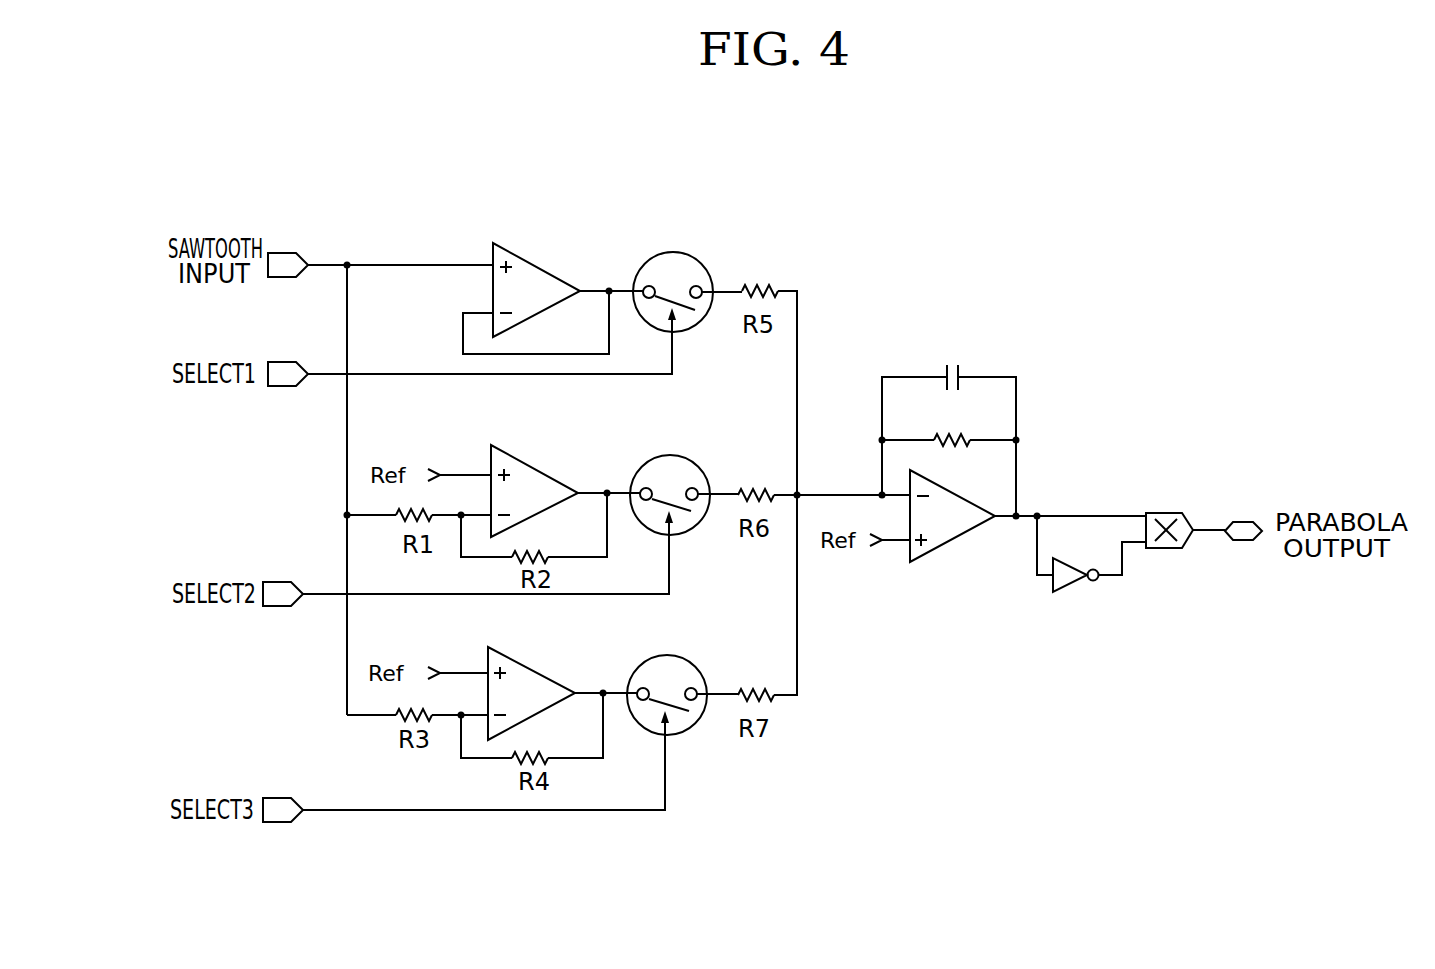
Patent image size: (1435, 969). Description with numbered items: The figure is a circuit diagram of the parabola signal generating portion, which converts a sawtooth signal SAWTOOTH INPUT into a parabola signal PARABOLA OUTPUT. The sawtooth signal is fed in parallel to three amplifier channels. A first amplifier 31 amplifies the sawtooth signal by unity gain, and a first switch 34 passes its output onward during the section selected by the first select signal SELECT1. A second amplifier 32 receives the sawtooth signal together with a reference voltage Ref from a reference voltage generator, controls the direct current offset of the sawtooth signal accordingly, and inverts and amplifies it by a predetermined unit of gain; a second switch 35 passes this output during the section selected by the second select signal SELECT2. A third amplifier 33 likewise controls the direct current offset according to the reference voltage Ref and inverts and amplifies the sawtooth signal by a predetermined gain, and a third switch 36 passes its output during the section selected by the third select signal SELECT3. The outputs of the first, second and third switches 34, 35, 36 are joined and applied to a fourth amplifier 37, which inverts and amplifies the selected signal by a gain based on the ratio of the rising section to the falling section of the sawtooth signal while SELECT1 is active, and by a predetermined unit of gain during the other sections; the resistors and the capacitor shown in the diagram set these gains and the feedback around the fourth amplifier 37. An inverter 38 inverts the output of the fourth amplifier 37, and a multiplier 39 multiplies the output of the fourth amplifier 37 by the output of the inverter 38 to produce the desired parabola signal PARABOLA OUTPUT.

The first amplifier 31 is at (535, 263).
The second amplifier 32 is at (528, 466).
The third amplifier 33 is at (526, 667).
The first switch 34 is at (701, 264).
The second switch 35 is at (698, 467).
The third switch 36 is at (695, 667).
The fourth amplifier 37 is at (950, 542).
The inverter 38 is at (1061, 592).
The multiplier 39 is at (1163, 549).